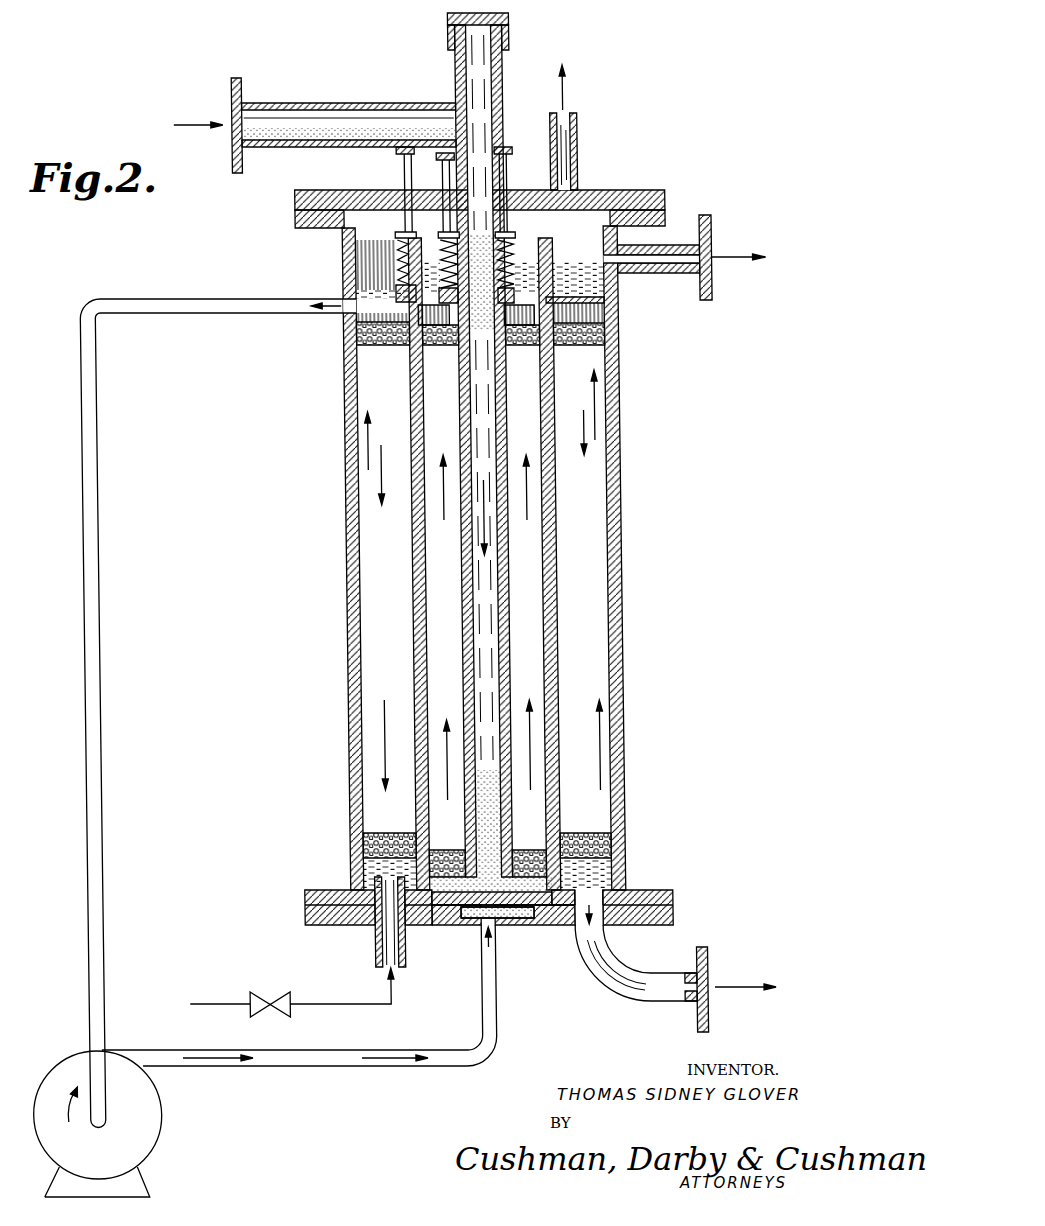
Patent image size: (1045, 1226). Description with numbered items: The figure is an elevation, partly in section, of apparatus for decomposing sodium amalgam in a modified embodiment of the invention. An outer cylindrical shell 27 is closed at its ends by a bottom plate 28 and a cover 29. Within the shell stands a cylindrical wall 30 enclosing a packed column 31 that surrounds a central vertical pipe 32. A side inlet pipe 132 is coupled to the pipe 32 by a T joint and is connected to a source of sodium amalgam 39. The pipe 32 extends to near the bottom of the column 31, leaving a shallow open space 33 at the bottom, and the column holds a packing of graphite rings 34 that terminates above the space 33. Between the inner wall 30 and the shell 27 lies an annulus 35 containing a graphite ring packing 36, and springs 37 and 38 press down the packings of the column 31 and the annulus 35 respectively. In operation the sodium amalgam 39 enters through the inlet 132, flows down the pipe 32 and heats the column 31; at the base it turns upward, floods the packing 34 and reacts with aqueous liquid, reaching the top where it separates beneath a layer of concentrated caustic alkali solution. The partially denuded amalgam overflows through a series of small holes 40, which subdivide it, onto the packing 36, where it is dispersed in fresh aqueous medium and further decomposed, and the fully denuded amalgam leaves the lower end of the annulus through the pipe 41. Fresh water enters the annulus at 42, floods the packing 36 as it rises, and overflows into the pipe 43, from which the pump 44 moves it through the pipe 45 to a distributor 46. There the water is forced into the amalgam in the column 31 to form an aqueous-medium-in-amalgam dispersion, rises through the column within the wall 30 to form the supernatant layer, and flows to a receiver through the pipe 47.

The outer cylindrical shell 27 is at (625, 812).
The bottom plate 28 is at (674, 913).
The cover 29 is at (641, 198).
The cylindrical wall 30 is at (558, 704).
The packed column 31 is at (531, 634).
The central vertical pipe 32 is at (462, 78).
The shallow open space 33 is at (446, 893).
The packing of graphite rings 34 is at (556, 908).
The annulus 35 is at (367, 550).
The graphite ring packing 36 is at (602, 841).
The springs 37 is at (518, 262).
The springs 38 is at (407, 268).
The sodium amalgam 39 is at (342, 140).
The small holes 40 is at (552, 298).
The pipe 41 is at (666, 987).
The fresh water inlet 42 is at (386, 950).
The pipe 43 is at (180, 315).
The pump 44 is at (151, 1096).
The pipe 45 is at (461, 1057).
The distributor 46 is at (528, 912).
The pipe 47 is at (718, 283).
The side inlet pipe 132 is at (280, 147).